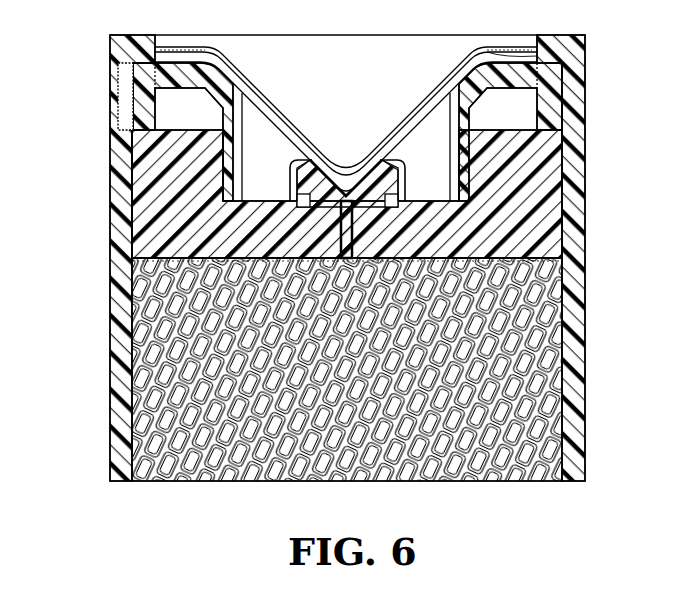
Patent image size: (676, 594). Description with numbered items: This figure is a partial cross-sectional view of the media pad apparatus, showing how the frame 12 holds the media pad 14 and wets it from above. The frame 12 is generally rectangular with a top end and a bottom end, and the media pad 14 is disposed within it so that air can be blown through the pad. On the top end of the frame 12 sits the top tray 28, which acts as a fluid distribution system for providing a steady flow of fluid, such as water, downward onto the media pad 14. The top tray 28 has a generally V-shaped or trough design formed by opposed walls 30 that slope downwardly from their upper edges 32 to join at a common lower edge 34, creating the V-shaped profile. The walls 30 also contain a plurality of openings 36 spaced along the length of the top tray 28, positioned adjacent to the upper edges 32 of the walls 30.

The frame 12 is at (100, 210).
The media pad 14 is at (198, 347).
The top tray 28 is at (145, 77).
The opposed walls 30 is at (190, 105).
The upper edges 32 is at (520, 58).
The lower edge 34 is at (349, 178).
The openings 36 is at (440, 175).